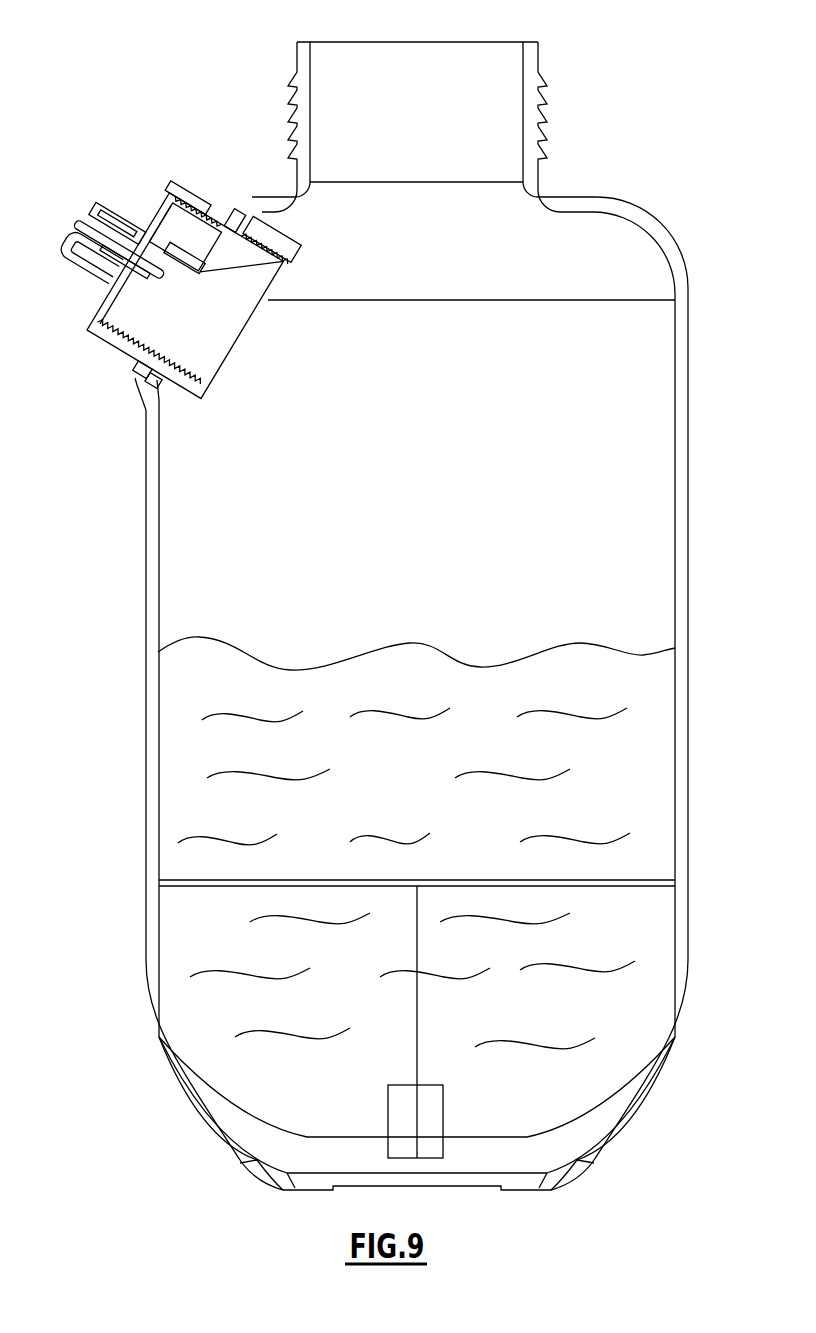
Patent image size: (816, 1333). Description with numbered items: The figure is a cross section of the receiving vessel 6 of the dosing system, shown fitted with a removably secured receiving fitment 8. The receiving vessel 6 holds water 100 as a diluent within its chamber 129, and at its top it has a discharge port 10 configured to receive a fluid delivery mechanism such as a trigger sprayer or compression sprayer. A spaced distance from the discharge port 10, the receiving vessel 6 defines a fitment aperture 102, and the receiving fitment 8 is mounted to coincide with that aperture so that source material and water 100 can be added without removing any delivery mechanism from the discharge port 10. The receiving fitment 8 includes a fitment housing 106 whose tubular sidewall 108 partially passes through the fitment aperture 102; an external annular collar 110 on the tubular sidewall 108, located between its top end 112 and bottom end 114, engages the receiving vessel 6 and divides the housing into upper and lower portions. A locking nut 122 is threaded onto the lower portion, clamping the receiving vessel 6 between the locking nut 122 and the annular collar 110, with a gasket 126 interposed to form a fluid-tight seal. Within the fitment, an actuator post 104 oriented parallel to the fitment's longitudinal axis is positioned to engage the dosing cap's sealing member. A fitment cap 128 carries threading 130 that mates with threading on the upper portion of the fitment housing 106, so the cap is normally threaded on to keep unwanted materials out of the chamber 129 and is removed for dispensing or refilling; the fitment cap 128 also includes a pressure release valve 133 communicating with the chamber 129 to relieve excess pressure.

The receiving vessel 6 is at (689, 411).
The receiving fitment 8 is at (202, 580).
The discharge port 10 is at (527, 48).
The water 100 is at (650, 747).
The fitment aperture 102 is at (236, 204).
The actuator post 104 is at (182, 268).
The fitment housing 106 is at (228, 350).
The tubular sidewall 108 is at (139, 362).
The external annular collar 110 is at (142, 386).
The top end 112 is at (118, 291).
The bottom end 114 is at (257, 315).
The locking nut 122 is at (292, 240).
The gasket 126 is at (288, 226).
The fitment cap 128 is at (166, 188).
The chamber 129 is at (628, 565).
The threading 130 is at (110, 342).
The pressure release valve 133 is at (100, 212).